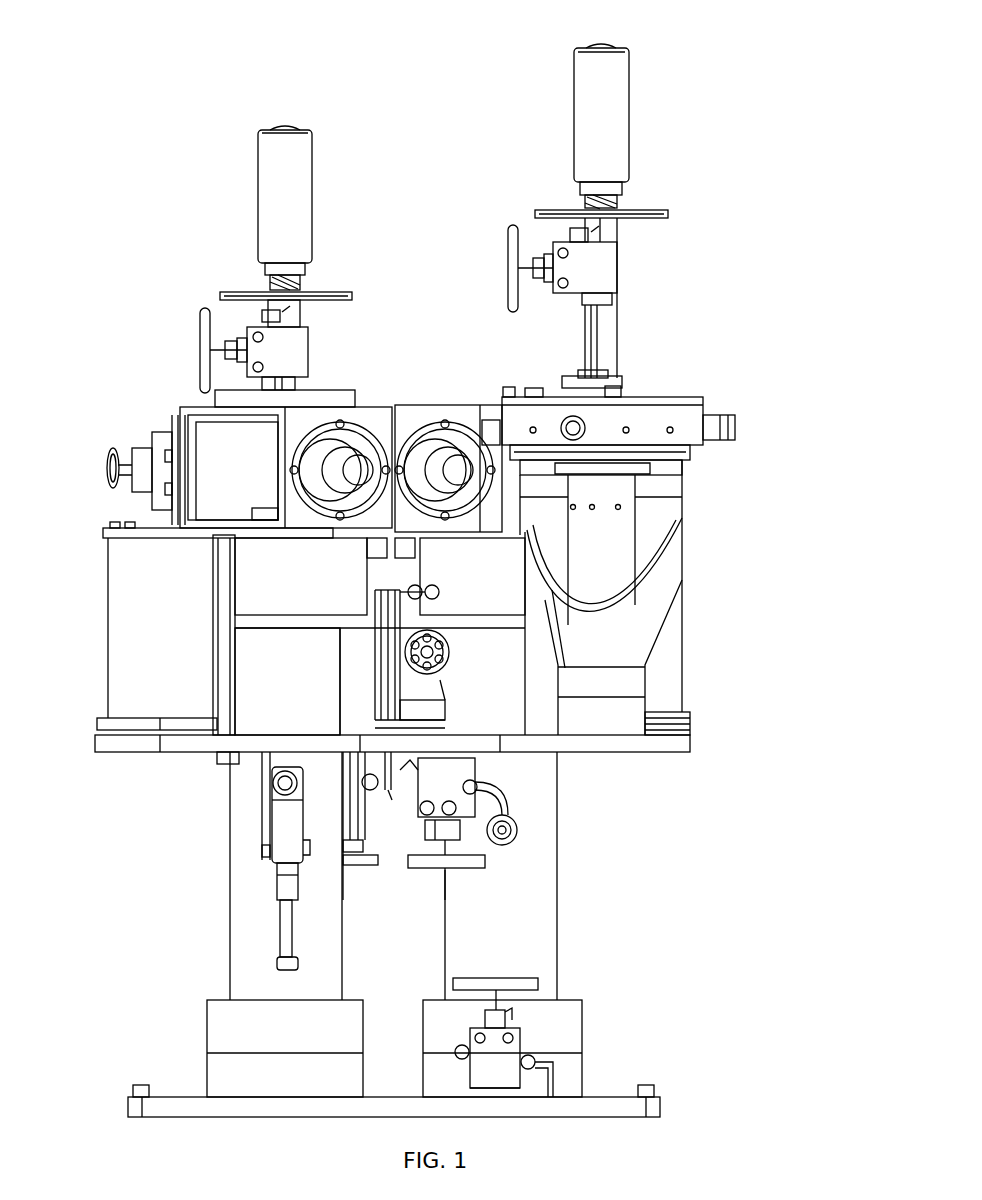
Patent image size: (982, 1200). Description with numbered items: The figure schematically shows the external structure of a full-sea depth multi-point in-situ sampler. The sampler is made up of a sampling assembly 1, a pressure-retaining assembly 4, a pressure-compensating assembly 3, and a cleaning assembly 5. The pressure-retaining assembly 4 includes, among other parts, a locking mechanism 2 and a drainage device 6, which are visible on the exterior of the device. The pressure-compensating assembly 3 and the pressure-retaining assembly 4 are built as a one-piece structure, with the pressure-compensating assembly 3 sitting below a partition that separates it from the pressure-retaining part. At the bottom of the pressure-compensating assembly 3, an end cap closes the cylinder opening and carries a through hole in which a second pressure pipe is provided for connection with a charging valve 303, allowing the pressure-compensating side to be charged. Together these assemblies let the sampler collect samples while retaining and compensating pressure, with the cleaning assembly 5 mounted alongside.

The sampling assembly 1 is at (273, 202).
The locking mechanism 2 is at (152, 457).
The pressure-compensating assembly 3 is at (238, 930).
The pressure-retaining assembly 4 is at (463, 408).
The cleaning assembly 5 is at (665, 410).
The drainage device 6 is at (443, 687).
The charging valve 303 is at (508, 1052).